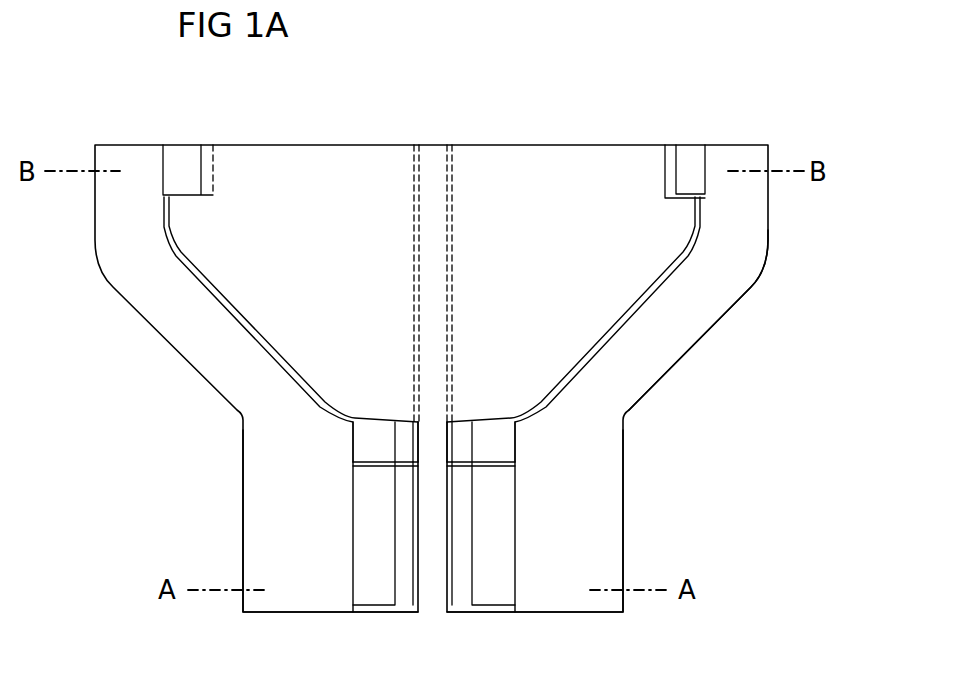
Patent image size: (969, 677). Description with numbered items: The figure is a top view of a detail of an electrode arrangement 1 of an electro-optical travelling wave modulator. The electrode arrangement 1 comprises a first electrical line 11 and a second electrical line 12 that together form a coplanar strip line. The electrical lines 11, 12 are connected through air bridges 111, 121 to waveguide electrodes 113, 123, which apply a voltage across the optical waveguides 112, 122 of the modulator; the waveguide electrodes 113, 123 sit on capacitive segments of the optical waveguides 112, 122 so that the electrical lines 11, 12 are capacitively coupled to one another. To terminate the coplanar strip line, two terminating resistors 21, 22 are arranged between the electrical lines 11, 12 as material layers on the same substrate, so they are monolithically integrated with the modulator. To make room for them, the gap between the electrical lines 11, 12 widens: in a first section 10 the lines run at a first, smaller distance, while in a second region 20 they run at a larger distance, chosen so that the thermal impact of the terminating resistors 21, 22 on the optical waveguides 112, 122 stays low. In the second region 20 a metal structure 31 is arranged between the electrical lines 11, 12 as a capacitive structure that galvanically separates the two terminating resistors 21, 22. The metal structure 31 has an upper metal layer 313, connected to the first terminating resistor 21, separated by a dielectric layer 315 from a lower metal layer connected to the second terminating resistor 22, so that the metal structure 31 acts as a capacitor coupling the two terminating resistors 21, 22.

The electrode arrangement 1 is at (786, 107).
The first section 10 is at (658, 492).
The first electrical line 11 is at (204, 528).
The second electrical line 12 is at (728, 368).
The second region 20 is at (795, 247).
The first terminating resistor 21 is at (176, 160).
The second terminating resistor 22 is at (692, 160).
The metal structure 31 is at (550, 167).
The upper metal layer 313 is at (322, 162).
The dielectric layer 315 is at (668, 162).
The air bridge 111 is at (355, 467).
The first optical waveguide 112 is at (415, 440).
The first waveguide electrode 113 is at (417, 533).
The air bridge 121 is at (487, 467).
The second optical waveguide 122 is at (452, 443).
The second waveguide electrode 123 is at (447, 530).